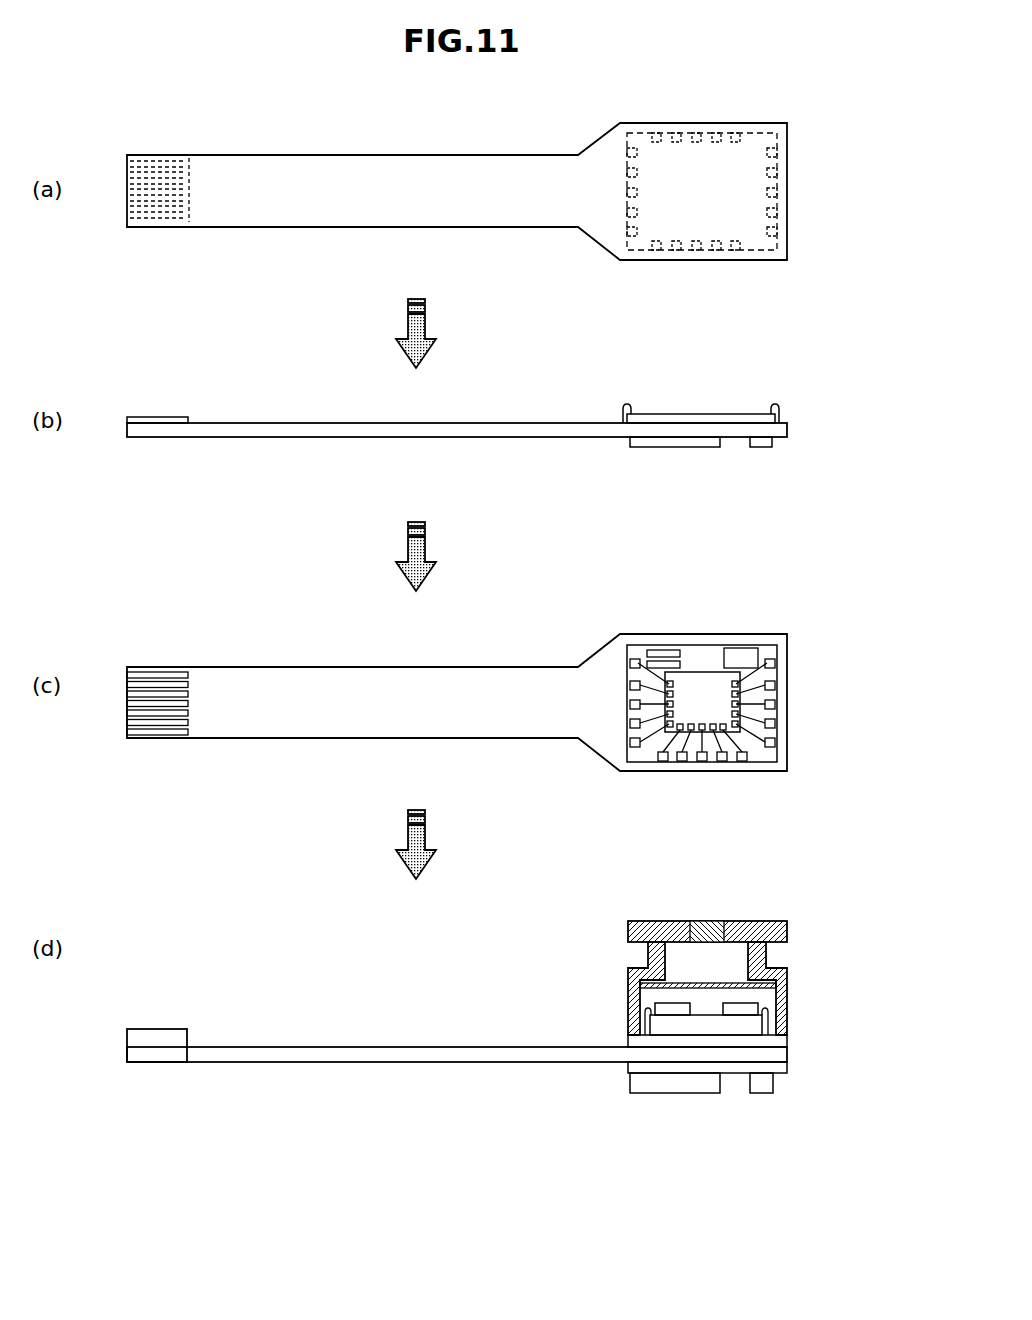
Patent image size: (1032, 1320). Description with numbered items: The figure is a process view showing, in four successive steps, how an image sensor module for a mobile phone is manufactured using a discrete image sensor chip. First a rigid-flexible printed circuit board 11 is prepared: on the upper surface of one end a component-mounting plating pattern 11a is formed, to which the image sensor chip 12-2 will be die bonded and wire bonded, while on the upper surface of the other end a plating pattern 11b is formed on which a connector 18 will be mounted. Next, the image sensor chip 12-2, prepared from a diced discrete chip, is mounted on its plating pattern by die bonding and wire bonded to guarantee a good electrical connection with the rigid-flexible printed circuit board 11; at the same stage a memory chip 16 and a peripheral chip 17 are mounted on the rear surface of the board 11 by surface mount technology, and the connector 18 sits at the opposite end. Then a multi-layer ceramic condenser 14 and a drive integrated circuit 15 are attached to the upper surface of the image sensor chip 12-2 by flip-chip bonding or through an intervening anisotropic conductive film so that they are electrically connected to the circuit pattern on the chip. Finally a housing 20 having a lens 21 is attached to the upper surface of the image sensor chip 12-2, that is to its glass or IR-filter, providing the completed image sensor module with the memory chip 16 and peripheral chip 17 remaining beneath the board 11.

The rigid-flexible printed circuit board 11 is at (787, 208).
The component-mounting plating pattern 11a is at (753, 181).
The plating pattern 11b is at (160, 173).
The image sensor chip 12-2 is at (716, 414).
The multi-layer ceramic condenser 14 is at (660, 652).
The drive integrated circuit 15 is at (738, 655).
The memory chip 16 is at (668, 448).
The peripheral chip 17 is at (760, 448).
The connector 18 is at (163, 417).
The housing 20 is at (654, 932).
The lens 21 is at (712, 926).